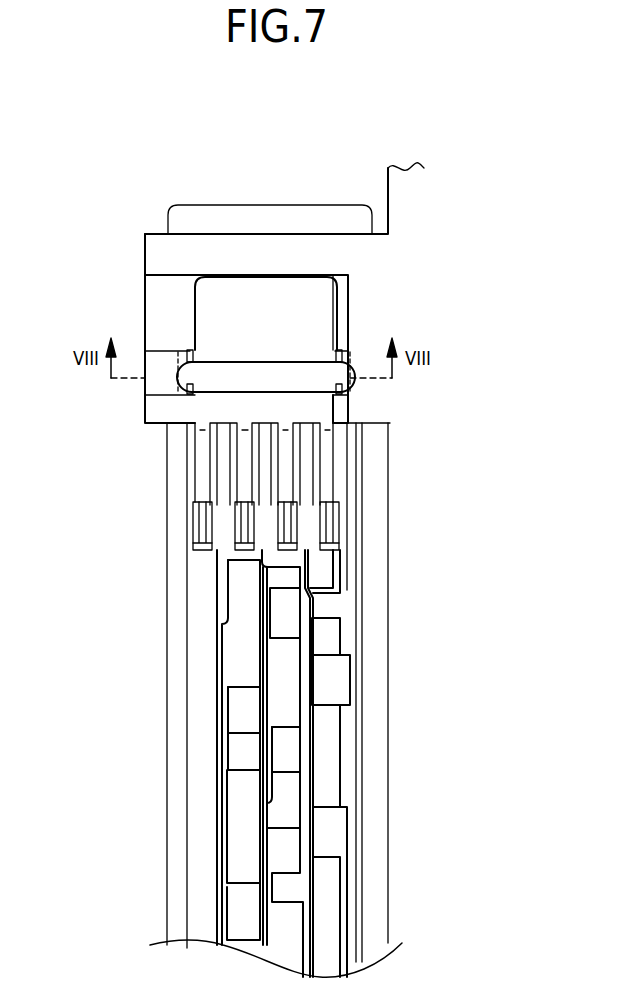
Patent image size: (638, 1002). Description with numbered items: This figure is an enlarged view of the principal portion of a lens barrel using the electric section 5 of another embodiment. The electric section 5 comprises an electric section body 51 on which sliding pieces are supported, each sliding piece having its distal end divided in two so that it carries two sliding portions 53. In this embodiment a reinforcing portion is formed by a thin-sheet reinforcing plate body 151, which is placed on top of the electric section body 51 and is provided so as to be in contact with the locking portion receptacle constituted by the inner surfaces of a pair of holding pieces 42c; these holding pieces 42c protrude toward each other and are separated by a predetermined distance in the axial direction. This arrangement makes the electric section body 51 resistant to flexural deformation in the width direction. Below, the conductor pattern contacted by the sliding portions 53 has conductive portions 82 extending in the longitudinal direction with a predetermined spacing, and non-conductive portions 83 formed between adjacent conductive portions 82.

The electric section 5 is at (320, 292).
The electric section body 51 is at (293, 302).
The reinforcing plate body 151 is at (297, 373).
The holding pieces 42c is at (183, 352).
The sliding portion 53 is at (232, 512).
The conductive portions 82 is at (242, 713).
The non-conductive portions 83 is at (222, 612).